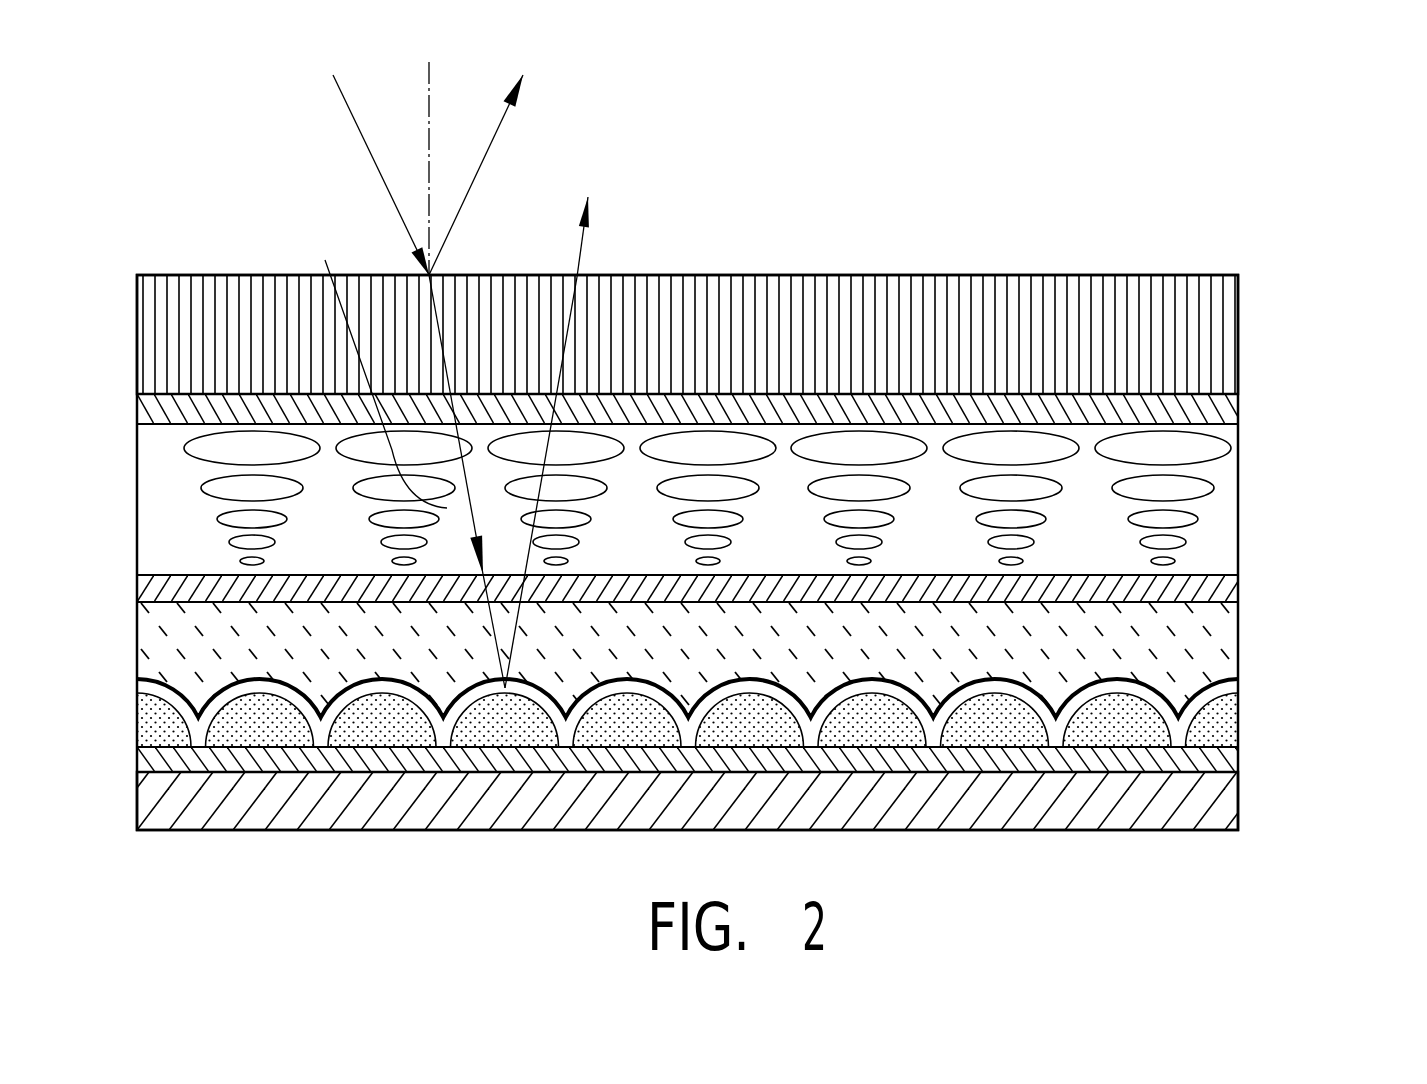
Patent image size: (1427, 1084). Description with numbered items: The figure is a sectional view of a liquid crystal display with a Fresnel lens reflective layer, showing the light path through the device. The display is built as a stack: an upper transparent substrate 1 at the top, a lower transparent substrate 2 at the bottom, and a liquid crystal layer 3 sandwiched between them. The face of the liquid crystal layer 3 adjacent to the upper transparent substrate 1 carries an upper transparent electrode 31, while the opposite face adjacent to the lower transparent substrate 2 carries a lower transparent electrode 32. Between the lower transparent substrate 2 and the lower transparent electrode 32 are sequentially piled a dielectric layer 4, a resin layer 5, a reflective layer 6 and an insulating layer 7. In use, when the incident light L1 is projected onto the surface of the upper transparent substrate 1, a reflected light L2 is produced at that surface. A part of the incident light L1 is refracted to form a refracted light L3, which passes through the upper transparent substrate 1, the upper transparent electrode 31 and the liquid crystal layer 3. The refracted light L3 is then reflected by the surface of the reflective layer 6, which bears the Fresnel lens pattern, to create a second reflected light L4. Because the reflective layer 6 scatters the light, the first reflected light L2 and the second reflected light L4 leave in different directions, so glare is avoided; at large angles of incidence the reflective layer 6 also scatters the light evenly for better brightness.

The upper transparent substrate 1 is at (1284, 365).
The upper transparent electrode 31 is at (1237, 407).
The liquid crystal layer 3 is at (1290, 510).
The lower transparent electrode 32 is at (1213, 588).
The insulating layer 7 is at (1190, 645).
The reflective layer 6 is at (1225, 690).
The resin layer 5 is at (1276, 722).
The dielectric layer 4 is at (1227, 753).
The lower transparent substrate 2 is at (1276, 798).
The incident light L1 is at (386, 188).
The reflected light L2 is at (478, 175).
The refracted light L3 is at (375, 364).
The reflected light L4 is at (578, 258).